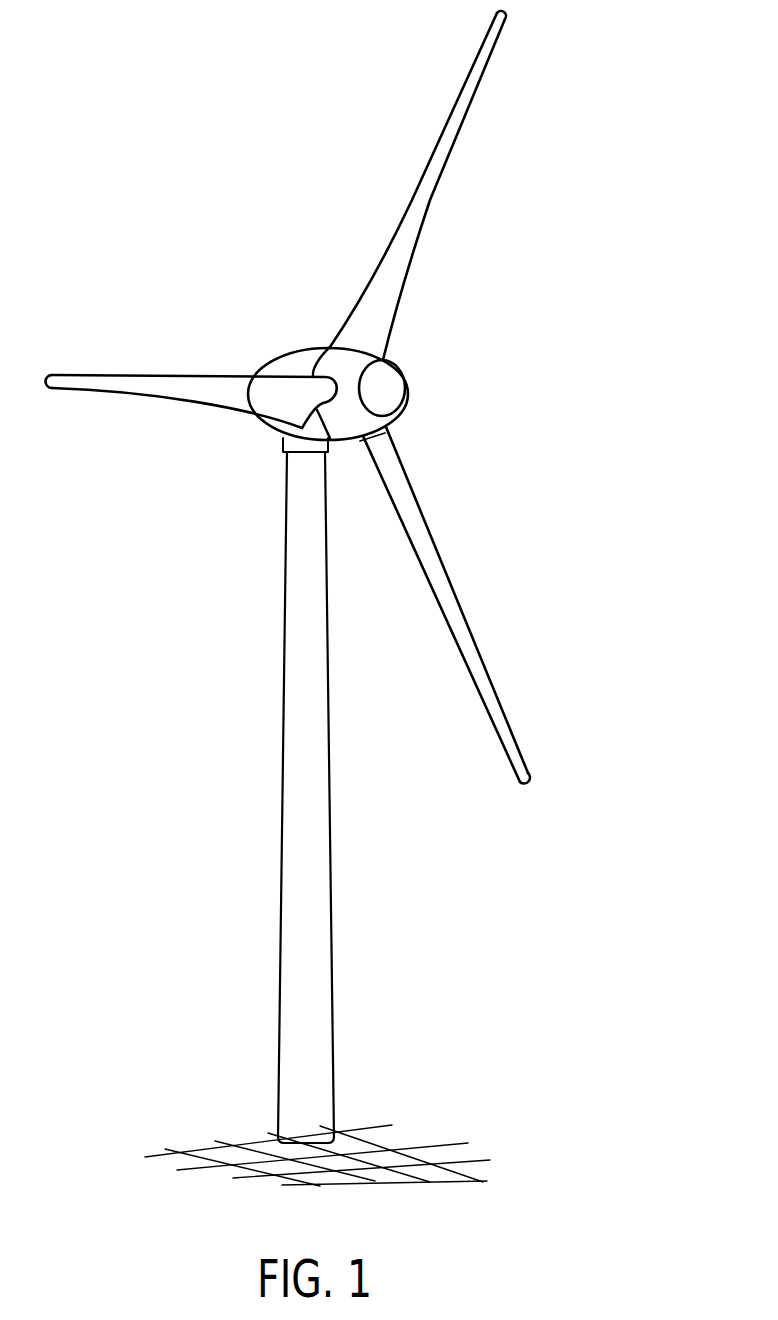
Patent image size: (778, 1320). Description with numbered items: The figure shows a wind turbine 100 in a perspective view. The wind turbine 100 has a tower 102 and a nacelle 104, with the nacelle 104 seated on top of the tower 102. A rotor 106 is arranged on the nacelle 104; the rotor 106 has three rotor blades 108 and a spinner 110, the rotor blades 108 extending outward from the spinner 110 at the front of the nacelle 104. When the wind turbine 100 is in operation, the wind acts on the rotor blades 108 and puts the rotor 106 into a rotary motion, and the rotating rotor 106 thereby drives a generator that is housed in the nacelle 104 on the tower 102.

The wind turbine 100 is at (225, 522).
The tower 102 is at (327, 888).
The nacelle 104 is at (290, 362).
The rotor 106 is at (540, 290).
The rotor blades 108 is at (420, 171).
The spinner 110 is at (398, 388).